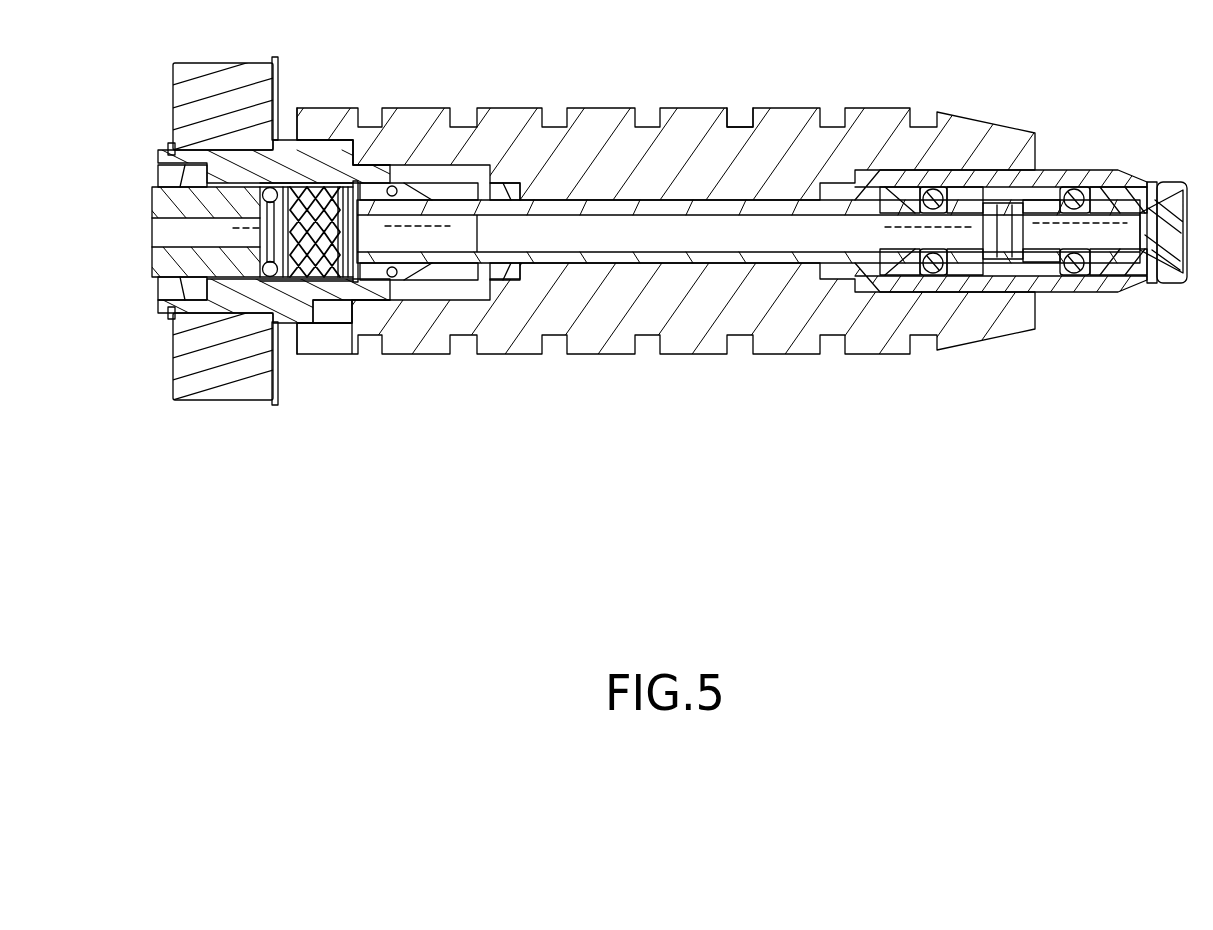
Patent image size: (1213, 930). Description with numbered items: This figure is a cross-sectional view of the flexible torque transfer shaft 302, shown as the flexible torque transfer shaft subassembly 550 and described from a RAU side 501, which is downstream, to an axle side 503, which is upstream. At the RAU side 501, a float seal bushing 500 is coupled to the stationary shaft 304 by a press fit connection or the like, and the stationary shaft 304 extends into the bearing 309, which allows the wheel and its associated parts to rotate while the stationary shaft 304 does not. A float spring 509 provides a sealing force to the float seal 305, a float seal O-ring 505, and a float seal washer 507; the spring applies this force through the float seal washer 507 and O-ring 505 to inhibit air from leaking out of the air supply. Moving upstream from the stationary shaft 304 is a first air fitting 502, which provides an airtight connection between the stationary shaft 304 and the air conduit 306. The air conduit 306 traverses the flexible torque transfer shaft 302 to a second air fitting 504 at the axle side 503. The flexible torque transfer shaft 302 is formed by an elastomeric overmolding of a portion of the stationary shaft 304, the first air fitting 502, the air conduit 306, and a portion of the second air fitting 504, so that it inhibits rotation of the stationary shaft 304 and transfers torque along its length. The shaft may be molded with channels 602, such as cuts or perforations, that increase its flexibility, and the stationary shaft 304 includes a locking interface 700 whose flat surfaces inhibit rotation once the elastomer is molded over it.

The flexible torque transfer shaft 302 is at (508, 348).
The stationary shaft 304 is at (298, 305).
The float seal 305 is at (167, 258).
The air conduit 306 is at (612, 242).
The bearing 309 is at (238, 104).
The float seal bushing 500 is at (200, 290).
The RAU side 501 is at (252, 271).
The first air fitting 502 is at (433, 285).
The axle side 503 is at (1013, 340).
The second air fitting 504 is at (990, 275).
The float seal O-ring 505 is at (268, 268).
The float seal washer 507 is at (287, 190).
The float spring 509 is at (431, 228).
The flexible torque transfer shaft subassembly 550 is at (1188, 520).
The channels 602 is at (740, 112).
The locking interface 700 is at (377, 322).